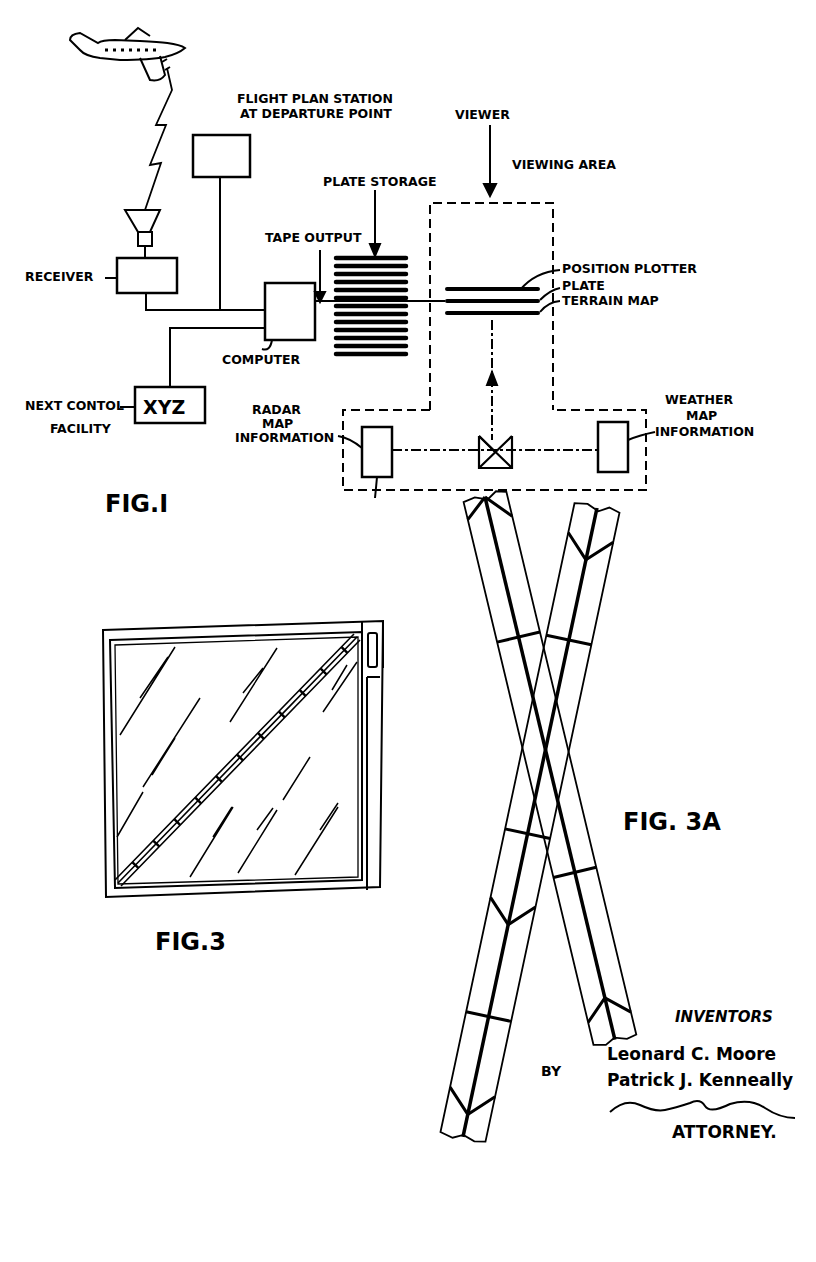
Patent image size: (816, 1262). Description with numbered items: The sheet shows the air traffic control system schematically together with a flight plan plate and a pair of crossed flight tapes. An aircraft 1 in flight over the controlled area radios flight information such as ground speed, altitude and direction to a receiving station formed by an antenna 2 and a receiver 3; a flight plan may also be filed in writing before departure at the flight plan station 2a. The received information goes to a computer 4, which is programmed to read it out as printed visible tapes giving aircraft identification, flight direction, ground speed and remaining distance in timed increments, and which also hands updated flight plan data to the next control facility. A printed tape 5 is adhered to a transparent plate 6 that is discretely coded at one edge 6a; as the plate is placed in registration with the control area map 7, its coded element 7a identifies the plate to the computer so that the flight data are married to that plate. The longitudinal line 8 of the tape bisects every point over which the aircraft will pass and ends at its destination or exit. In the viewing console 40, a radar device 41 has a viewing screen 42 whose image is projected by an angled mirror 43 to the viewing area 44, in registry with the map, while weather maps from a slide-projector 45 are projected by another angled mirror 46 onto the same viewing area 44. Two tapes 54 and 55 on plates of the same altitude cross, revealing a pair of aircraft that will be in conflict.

In FIG. 1, the aircraft 1 is at (187, 48).
In FIG. 1, the antenna 2 is at (160, 213).
In FIG. 1, the flight plan station at departure point 2a is at (250, 155).
In FIG. 1, the receiver 3 is at (177, 262).
In FIG. 1, the computer 4 is at (285, 283).
In FIG. 1, the printed tape 5 is at (316, 312).
In FIG. 3, the printed tape 5 is at (270, 725).
In FIG. 1, the transparent plate 6 is at (380, 257).
In FIG. 1, the control area map 7 is at (524, 316).
In FIG. 3, the coded element 7a is at (372, 632).
In FIG. 3, the coded edge 6a is at (383, 640).
In FIG. 3, the longitudinal line 8 is at (285, 710).
In FIG. 1, the viewing console 40 is at (646, 488).
In FIG. 1, the radar device 41 is at (379, 496).
In FIG. 1, the viewing screen 42 is at (392, 465).
In FIG. 1, the angled mirror 43 is at (512, 440).
In FIG. 1, the viewing area 44 is at (530, 203).
In FIG. 1, the slide-projector 45 is at (628, 462).
In FIG. 1, the angled mirror 46 is at (479, 438).
In FIG. 3A, the tape 54 is at (580, 718).
In FIG. 3A, the tape 55 is at (500, 710).